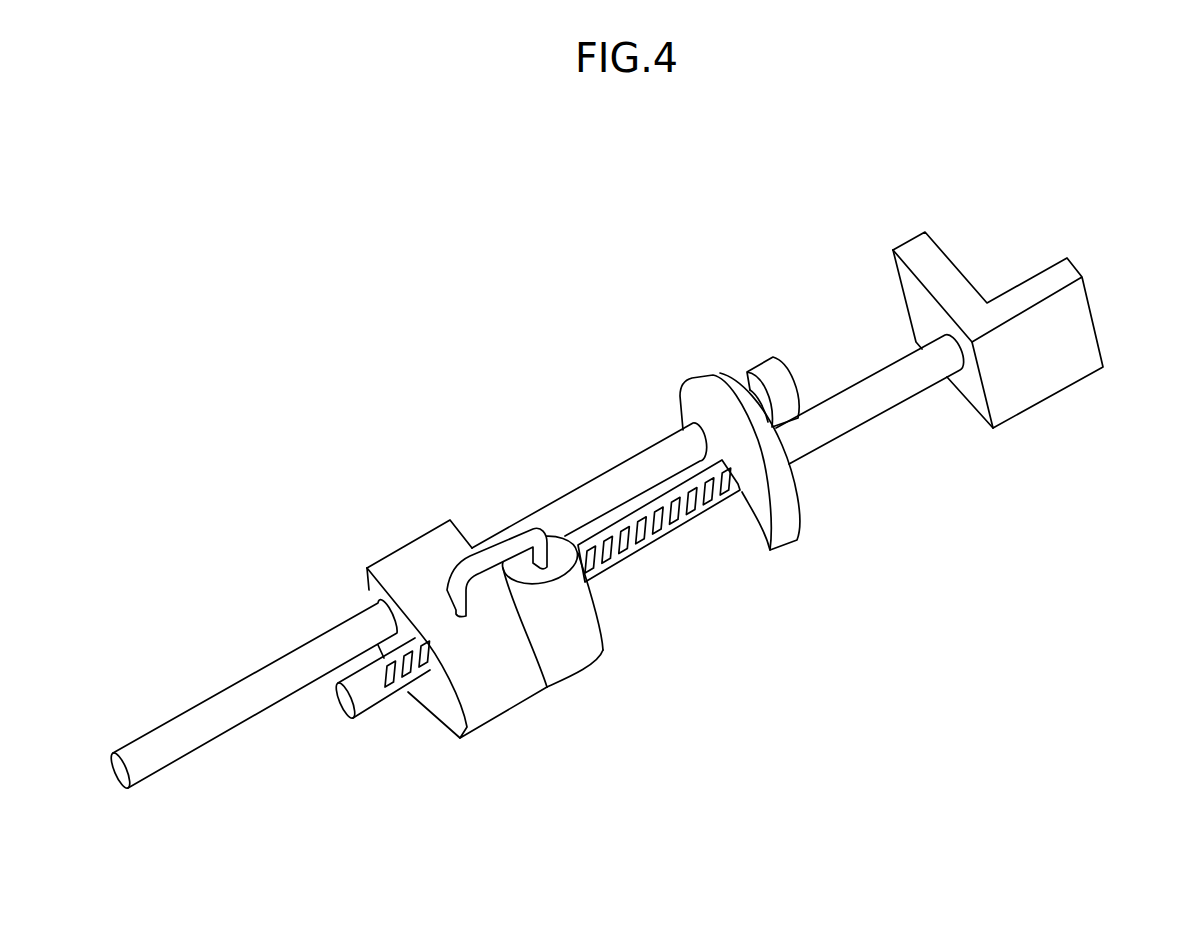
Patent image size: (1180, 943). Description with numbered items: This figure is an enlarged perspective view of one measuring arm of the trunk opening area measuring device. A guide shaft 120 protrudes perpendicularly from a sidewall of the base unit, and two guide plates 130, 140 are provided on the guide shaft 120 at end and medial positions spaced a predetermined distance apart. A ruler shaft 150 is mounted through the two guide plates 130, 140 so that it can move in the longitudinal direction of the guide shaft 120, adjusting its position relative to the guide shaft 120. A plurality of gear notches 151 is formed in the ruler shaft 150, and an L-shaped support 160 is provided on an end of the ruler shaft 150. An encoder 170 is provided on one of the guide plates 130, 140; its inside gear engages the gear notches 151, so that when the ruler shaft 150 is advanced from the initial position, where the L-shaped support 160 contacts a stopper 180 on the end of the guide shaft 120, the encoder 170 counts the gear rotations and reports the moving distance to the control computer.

The guide shaft 120 is at (212, 692).
The guide plate 130 is at (507, 695).
The guide plate 140 is at (790, 527).
The ruler shaft 150 is at (640, 517).
The gear notches 151 is at (672, 540).
The L-shaped support 160 is at (1053, 375).
The encoder 170 is at (583, 662).
The stopper 180 is at (767, 368).